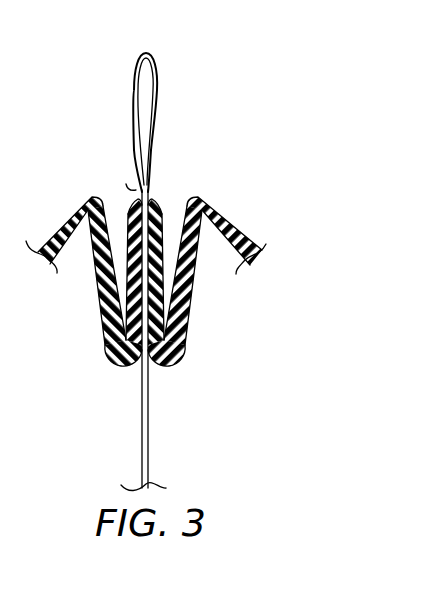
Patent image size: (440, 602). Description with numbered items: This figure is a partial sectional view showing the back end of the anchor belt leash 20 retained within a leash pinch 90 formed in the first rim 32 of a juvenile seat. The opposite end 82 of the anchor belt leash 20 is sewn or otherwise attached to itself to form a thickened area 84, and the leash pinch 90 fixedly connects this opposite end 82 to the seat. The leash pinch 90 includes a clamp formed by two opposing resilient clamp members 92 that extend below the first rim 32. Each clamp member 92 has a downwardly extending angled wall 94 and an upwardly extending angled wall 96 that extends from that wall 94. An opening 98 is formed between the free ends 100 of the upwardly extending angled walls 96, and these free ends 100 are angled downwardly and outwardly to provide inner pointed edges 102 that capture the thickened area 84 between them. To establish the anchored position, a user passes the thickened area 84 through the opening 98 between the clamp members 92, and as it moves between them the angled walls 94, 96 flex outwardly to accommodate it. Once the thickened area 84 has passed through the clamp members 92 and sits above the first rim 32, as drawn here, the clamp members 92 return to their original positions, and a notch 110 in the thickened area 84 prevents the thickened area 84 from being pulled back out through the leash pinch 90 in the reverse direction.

The anchor belt leash 20 is at (151, 418).
The first rim 32 is at (59, 231).
The opposite end 82 is at (152, 153).
The thickened area 84 is at (158, 80).
The leash pinch 90 is at (136, 233).
The resilient clamp members 92 is at (104, 195).
The downwardly extending angled wall 94 is at (100, 270).
The upwardly extending angled wall 96 is at (124, 318).
The opening 98 is at (158, 178).
The free ends 100 is at (128, 211).
The inner pointed edges 102 is at (167, 185).
The notch 110 is at (126, 185).